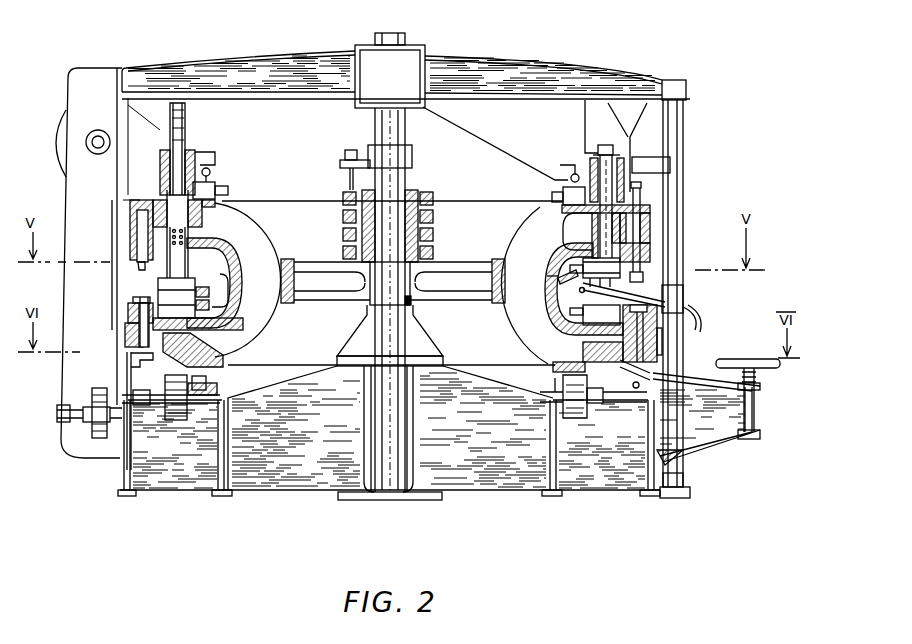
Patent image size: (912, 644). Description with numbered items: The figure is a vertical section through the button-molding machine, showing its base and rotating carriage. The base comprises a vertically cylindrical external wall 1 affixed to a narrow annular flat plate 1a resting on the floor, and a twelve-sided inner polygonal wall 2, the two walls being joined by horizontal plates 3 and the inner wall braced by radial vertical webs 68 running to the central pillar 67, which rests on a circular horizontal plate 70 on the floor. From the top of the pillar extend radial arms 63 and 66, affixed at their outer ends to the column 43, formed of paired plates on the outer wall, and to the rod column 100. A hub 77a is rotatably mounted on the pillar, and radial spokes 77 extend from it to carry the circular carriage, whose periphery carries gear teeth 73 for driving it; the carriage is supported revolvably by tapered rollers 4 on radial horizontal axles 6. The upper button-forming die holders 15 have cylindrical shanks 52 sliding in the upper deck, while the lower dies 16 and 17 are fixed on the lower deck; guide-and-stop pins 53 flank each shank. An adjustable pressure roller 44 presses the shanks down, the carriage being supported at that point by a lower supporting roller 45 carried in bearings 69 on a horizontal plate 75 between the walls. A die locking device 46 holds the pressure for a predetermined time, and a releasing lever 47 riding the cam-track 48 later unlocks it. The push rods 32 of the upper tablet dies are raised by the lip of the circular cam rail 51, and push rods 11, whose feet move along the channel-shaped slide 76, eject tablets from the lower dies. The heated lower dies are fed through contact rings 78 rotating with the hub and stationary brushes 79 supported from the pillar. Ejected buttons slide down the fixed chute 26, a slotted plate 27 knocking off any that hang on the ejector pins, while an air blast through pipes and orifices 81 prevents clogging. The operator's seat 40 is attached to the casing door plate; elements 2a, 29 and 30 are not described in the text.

The external wall 1 is at (122, 477).
The horizontal flat plate 1a is at (133, 498).
The polygonal wall 2 is at (554, 472).
The foot 2a is at (226, 498).
The horizontal plates 3 is at (618, 404).
The tapered rollers 4 is at (578, 406).
The horizontal axles 6 is at (555, 396).
The push rod 11 is at (650, 341).
The upper button-forming die holders 15 is at (590, 263).
The lower die 16 is at (577, 328).
The lower tablet die 17 is at (655, 322).
The chute 26 is at (700, 318).
The plate 27 is at (580, 292).
The bracket 29 is at (686, 463).
The hand gear 30 is at (125, 370).
The push rods 32 is at (641, 206).
The operator's seat 40 is at (736, 362).
The vertical column 43 is at (93, 76).
The pressure roller 44 is at (187, 128).
The lower supporting roller 45 is at (186, 410).
The die locking device 46 is at (552, 192).
The releasing lever 47 is at (573, 175).
The releasing cam-track 48 is at (215, 156).
The cam rail 51 is at (633, 153).
The cylindrical shanks 52 is at (600, 229).
The guide-and-stop pins 53 is at (192, 256).
The radial arm 63 is at (233, 78).
The radial arm 66 is at (512, 70).
The central pillar 67 is at (394, 35).
The radial vertical webs 68 is at (488, 480).
The bearings 69 is at (206, 384).
The circular horizontal plate 70 is at (348, 500).
The gear teeth 73 is at (128, 332).
The horizontal plate 75 is at (150, 405).
The slide 76 is at (634, 371).
The radial spokes 77 is at (341, 290).
The hub 77a is at (412, 302).
The contact rings 78 is at (422, 238).
The brushes 79 is at (348, 238).
The pipes and orifices 81 is at (560, 282).
The column 100 is at (684, 115).